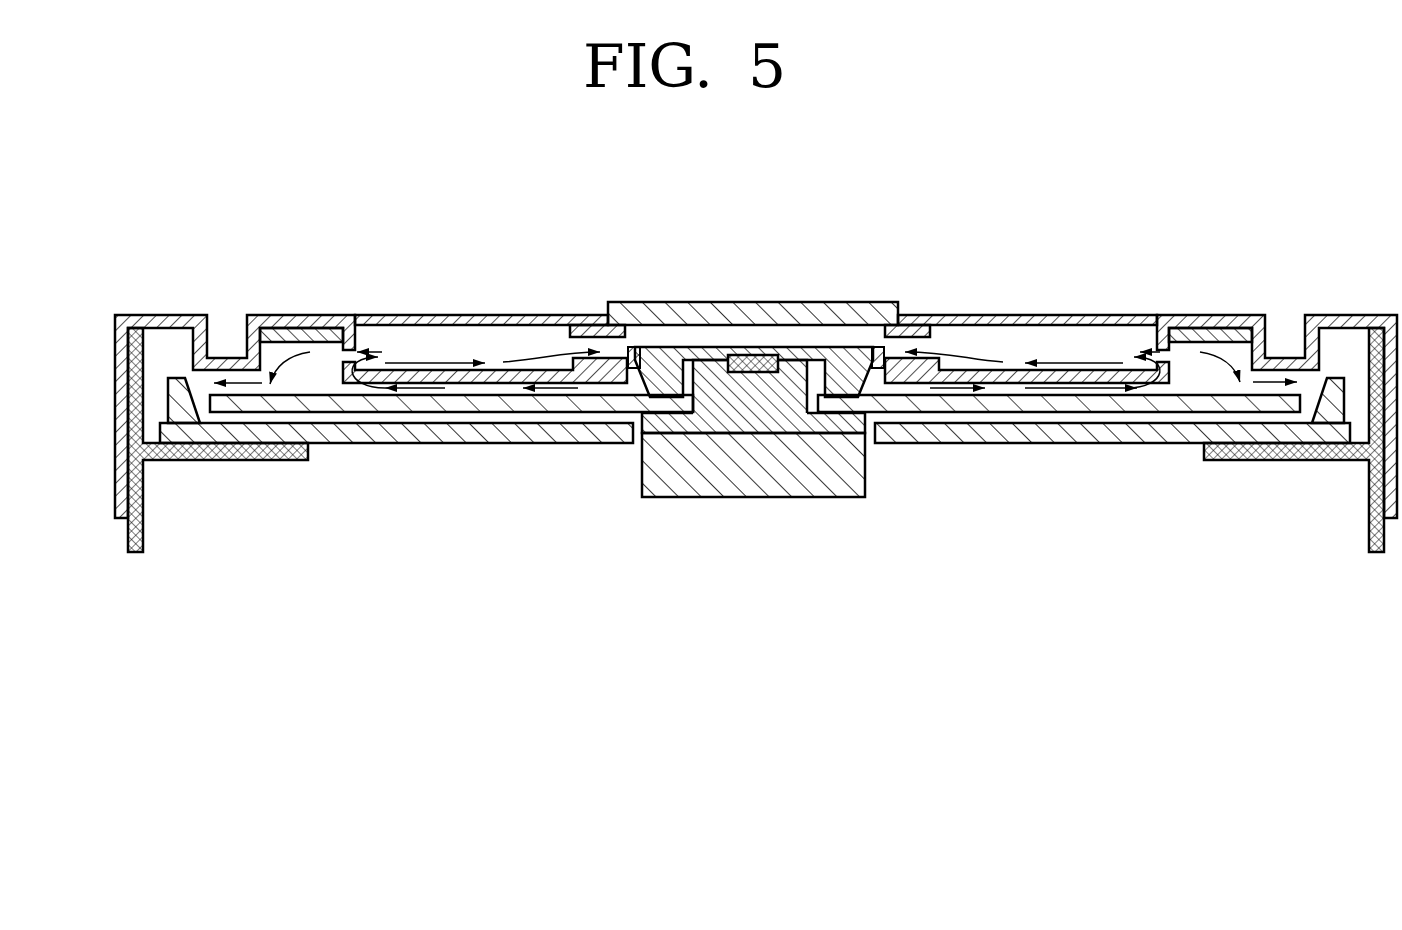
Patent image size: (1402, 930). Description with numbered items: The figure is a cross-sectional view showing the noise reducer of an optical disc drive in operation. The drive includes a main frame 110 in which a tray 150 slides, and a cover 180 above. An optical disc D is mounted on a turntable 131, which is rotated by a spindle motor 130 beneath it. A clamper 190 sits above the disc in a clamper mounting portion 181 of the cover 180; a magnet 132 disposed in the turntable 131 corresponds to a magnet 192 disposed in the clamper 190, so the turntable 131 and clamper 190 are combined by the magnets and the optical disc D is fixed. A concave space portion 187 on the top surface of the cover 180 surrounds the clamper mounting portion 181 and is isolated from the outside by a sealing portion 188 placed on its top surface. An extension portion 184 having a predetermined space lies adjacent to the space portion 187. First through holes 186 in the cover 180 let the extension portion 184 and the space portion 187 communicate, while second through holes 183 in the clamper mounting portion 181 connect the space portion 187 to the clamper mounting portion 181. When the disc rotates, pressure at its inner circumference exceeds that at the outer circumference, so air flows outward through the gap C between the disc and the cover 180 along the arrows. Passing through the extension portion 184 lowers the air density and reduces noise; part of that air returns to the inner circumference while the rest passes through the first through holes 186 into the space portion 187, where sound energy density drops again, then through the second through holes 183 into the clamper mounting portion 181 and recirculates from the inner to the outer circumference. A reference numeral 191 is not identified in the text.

The main frame 110 is at (143, 520).
The spindle motor 130 is at (762, 475).
The turntable 131 is at (793, 423).
The magnet 132 is at (733, 425).
The tray 150 is at (407, 440).
The cover 180 is at (132, 317).
The clamper mounting portion 181 is at (593, 380).
The second through holes 183 is at (587, 342).
The extension portion 184 is at (278, 353).
The first through holes 186 is at (366, 348).
The space portion 187 is at (455, 348).
The sealing portion 188 is at (487, 313).
The clamper 190 is at (690, 353).
The top block 191 is at (790, 313).
The magnet 192 is at (752, 357).
The gap C is at (367, 390).
The optical disc D is at (1113, 407).